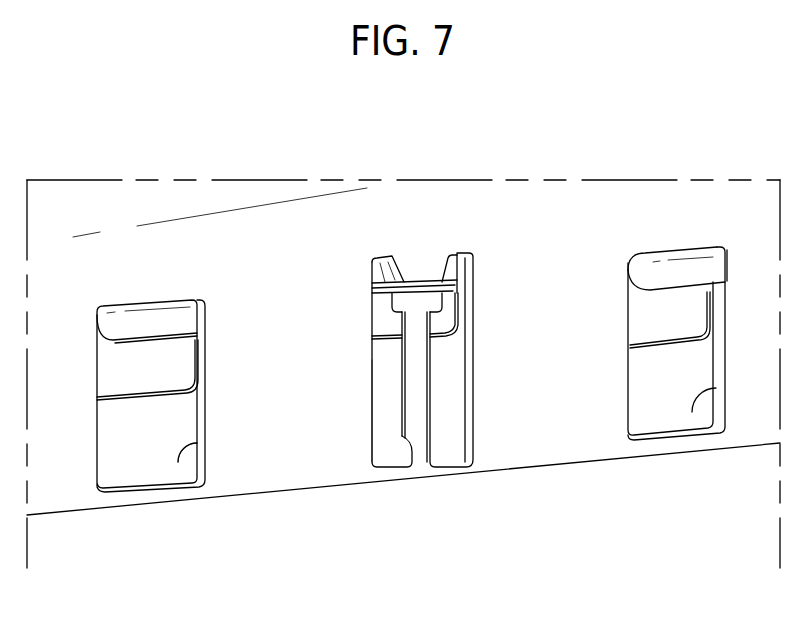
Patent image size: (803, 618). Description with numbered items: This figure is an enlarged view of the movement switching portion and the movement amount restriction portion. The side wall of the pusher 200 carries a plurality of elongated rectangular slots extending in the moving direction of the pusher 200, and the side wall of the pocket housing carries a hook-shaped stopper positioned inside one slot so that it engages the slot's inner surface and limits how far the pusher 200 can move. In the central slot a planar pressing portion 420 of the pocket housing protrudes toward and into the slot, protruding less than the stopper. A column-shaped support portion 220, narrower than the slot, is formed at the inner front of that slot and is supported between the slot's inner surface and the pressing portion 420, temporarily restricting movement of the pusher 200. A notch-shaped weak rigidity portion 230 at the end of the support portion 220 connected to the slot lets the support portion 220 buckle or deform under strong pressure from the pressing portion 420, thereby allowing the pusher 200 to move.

The pusher 200 is at (268, 258).
The support portion 220 is at (423, 413).
The weak rigidity portion 230 is at (402, 440).
The pressing portion 420 is at (383, 282).